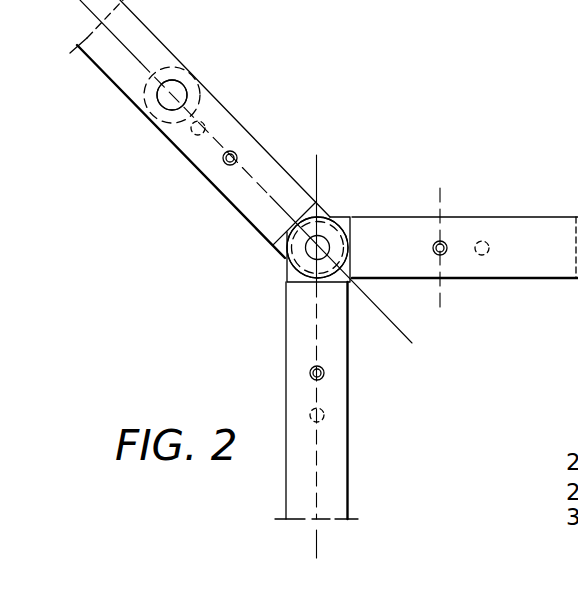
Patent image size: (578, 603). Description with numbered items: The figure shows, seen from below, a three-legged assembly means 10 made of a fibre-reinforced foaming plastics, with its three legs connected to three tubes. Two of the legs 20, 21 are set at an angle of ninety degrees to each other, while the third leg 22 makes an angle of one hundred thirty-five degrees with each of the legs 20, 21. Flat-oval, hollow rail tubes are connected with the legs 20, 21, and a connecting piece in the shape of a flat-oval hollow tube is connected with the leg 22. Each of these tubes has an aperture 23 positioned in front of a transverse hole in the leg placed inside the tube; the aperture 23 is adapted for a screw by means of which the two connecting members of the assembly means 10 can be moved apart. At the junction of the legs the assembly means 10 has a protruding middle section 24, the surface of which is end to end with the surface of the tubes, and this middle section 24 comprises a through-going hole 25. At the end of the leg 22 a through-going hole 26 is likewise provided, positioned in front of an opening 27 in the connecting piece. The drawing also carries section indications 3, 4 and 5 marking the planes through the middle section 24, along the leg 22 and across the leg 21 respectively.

The section line 3- 3 is at (323, 171).
The section line 4- 4 is at (83, 6).
The section line 5- 5 is at (444, 198).
The three-legged assembly means 10 is at (283, 250).
The leg 20 is at (340, 435).
The leg 21 is at (537, 238).
The third leg 22 is at (157, 52).
The aperture 23 is at (236, 155).
The protruding middle section 24 is at (319, 201).
The through-going hole 25 is at (310, 252).
The through-going hole 26 is at (167, 100).
The opening 27 is at (177, 92).